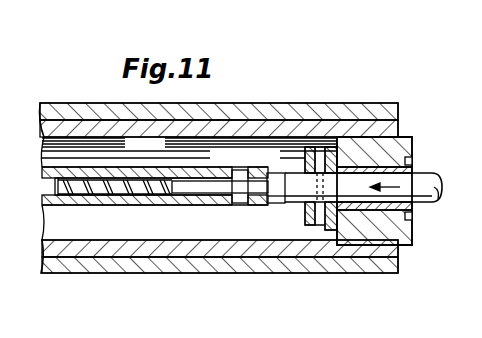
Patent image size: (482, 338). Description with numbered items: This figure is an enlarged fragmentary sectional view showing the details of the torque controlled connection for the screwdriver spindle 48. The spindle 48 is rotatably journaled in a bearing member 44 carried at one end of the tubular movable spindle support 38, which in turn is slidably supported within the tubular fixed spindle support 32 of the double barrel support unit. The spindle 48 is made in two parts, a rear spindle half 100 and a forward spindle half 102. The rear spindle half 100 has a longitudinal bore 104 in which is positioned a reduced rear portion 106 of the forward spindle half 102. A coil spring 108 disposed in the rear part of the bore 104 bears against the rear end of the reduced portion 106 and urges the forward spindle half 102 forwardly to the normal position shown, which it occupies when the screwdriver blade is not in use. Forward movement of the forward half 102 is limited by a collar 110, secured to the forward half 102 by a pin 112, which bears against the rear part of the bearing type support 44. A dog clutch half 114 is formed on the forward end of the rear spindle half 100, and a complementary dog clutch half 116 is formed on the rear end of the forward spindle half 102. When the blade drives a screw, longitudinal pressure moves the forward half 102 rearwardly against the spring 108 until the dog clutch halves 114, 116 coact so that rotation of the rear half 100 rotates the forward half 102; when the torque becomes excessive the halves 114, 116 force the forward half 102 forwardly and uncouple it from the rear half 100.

The fixed spindle support 32 is at (345, 105).
The movable spindle support 38 is at (238, 125).
The bearing member 44 is at (415, 140).
The spindle 48 is at (195, 197).
The rear spindle half 100 is at (137, 168).
The forward spindle half 102 is at (425, 176).
The longitudinal bore 104 is at (110, 205).
The reduced rear portion 106 is at (261, 203).
The coil spring 108 is at (152, 197).
The collar 110 is at (306, 150).
The pin 112 is at (320, 231).
The dog clutch half 114 is at (240, 203).
The complementary dog clutch half 116 is at (277, 201).